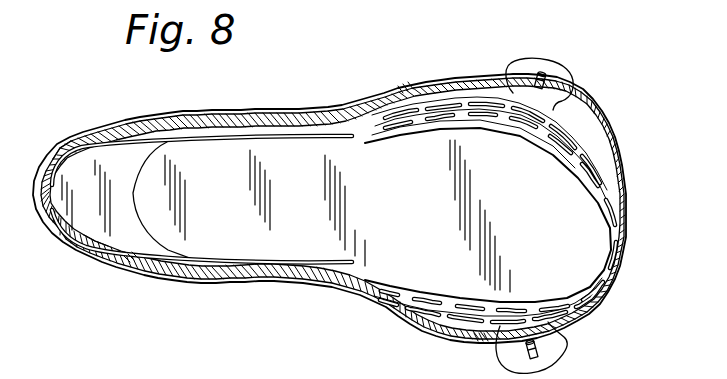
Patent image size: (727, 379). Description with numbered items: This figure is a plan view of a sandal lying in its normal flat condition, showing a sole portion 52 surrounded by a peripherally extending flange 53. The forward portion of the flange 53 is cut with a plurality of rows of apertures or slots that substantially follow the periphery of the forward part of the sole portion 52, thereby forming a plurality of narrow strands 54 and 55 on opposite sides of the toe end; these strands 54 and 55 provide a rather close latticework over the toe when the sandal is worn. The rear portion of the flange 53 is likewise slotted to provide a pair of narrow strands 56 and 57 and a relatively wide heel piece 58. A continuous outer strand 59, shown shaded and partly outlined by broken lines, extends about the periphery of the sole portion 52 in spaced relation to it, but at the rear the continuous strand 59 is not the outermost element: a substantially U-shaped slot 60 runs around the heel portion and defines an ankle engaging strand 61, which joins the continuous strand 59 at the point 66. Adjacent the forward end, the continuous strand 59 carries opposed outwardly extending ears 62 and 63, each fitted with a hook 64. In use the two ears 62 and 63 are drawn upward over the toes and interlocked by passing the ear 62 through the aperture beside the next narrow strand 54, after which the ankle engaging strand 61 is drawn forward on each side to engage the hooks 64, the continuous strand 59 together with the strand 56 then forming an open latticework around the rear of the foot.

The sole portion 52 is at (353, 206).
The peripherally extending flange 53 is at (612, 154).
The narrow strands 54 is at (570, 318).
The narrow strands 55 is at (585, 142).
The narrow strand 56 is at (215, 270).
The narrow strand 57 is at (222, 131).
The heel piece 58 is at (97, 210).
The continuous outer strand 59 is at (403, 92).
The U-shaped slot 60 is at (97, 262).
The ankle engaging strand 61 is at (60, 150).
The ear 62 is at (566, 80).
The ear 63 is at (555, 347).
The hook 64 is at (543, 77).
The point 66 is at (285, 118).